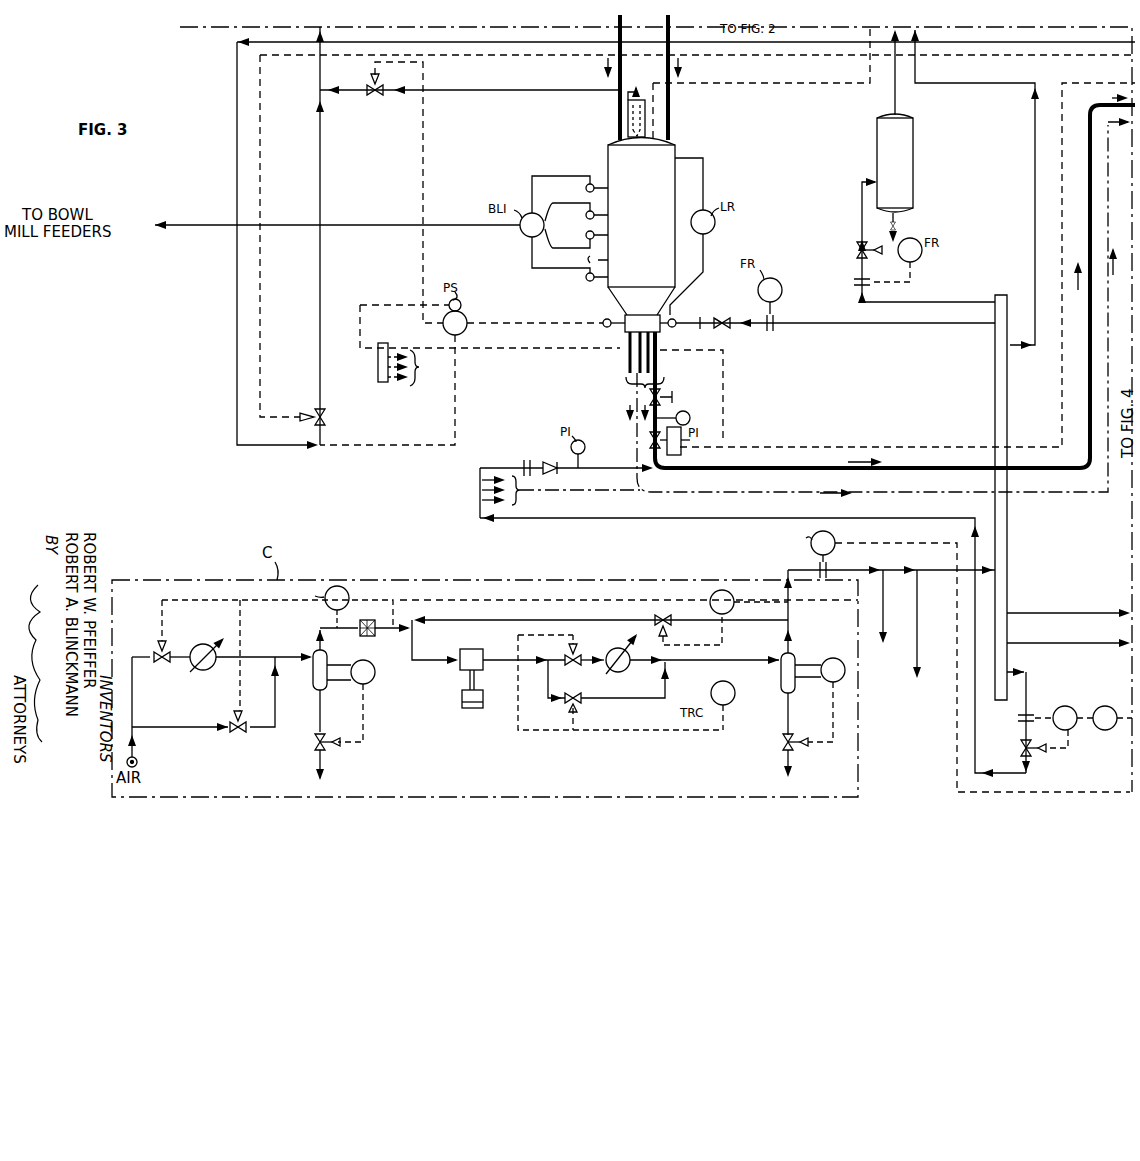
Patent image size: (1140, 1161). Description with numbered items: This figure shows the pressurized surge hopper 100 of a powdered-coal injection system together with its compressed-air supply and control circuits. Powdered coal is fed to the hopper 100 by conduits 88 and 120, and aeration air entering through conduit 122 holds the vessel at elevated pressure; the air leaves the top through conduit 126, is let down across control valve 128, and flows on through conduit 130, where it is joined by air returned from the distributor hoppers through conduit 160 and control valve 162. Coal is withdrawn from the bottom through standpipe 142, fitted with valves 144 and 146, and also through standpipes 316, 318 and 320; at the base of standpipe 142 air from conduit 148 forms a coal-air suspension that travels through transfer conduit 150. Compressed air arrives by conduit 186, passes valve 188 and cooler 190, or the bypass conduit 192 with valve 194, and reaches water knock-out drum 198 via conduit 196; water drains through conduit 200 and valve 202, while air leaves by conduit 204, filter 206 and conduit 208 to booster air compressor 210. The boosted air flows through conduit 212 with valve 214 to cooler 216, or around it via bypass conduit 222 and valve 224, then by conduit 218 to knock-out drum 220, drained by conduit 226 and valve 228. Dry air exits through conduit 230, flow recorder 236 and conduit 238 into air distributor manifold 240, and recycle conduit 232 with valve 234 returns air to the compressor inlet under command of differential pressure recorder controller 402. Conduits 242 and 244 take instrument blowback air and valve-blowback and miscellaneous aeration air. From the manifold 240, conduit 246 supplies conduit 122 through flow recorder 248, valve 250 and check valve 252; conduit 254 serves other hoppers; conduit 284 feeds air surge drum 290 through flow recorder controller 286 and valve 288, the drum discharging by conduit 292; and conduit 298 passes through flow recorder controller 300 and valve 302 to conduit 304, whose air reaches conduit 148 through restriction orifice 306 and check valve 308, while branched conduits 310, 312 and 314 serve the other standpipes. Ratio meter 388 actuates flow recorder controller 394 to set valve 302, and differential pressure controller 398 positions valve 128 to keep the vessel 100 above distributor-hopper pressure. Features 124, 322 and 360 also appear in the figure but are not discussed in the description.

The conduit 88 is at (618, 120).
The pressurized surge hopper 100 is at (658, 197).
The conduit 120 is at (672, 118).
The conduit 122 is at (676, 326).
The sampler 124 is at (627, 105).
The conduit 126 is at (480, 90).
The control valve 128 is at (378, 94).
The conduit 130 is at (320, 70).
The standpipe 142 is at (658, 374).
The valve 144 is at (672, 397).
The slide valve 146 is at (680, 455).
The conduit 148 is at (597, 468).
The transfer conduit 150 is at (1100, 103).
The conduit 160 is at (237, 305).
The control valve 162 is at (320, 420).
The conduit 186 is at (133, 742).
The valve 188 is at (158, 650).
The cooler 190 is at (200, 646).
The bypass conduit 192 is at (190, 727).
The valve 194 is at (236, 735).
The conduit 196 is at (302, 657).
The water knock-out drum 198 is at (312, 684).
The conduit 200 is at (320, 718).
The valve 202 is at (313, 742).
The conduit 204 is at (318, 628).
The filter 206 is at (367, 619).
The conduit 208 is at (402, 636).
The booster air compressor 210 is at (460, 665).
The conduit 212 is at (497, 656).
The valve 214 is at (571, 668).
The cooler 216 is at (608, 650).
The conduit 218 is at (690, 662).
The water knock-out drum 220 is at (781, 672).
The bypass conduit 222 is at (545, 700).
The valve 224 is at (580, 706).
The conduit 226 is at (785, 720).
The valve 228 is at (782, 744).
The conduit 230 is at (790, 641).
The recycle conduit 232 is at (736, 628).
The valve 234 is at (655, 618).
The flow recorder 236 is at (815, 567).
The conduit 238 is at (838, 570).
The air distributor manifold 240 is at (1007, 532).
The conduit 242 is at (920, 625).
The conduit 244 is at (886, 628).
The conduit 246 is at (925, 325).
The flow recorder 248 is at (771, 330).
The valve 250 is at (724, 330).
The check valve 252 is at (716, 318).
The conduit 254 is at (1035, 350).
The conduit 284 is at (940, 302).
The flow recorder controller 286 is at (853, 282).
The valve 288 is at (857, 249).
The air surge drum 290 is at (913, 156).
The conduit 292 is at (897, 94).
The conduit 298 is at (1027, 680).
The flow recorder controller 300 is at (1017, 718).
The valve 302 is at (1036, 752).
The conduit 304 is at (556, 518).
The restriction orifice 306 is at (524, 465).
The check valve 308 is at (550, 474).
The branched conduit 310 is at (480, 477).
The branched conduit 312 is at (480, 490).
The branched conduit 314 is at (480, 503).
The standpipe 316 is at (628, 350).
The standpipe 318 is at (638, 358).
The standpipe 320 is at (626, 378).
The line 322 is at (1068, 613).
The line 360 is at (1068, 643).
The ratio meter 388 is at (1093, 712).
The flow recorder controller 394 is at (1071, 729).
The differential pressure controller 398 is at (466, 318).
The differential pressure recorder controller 402 is at (694, 592).